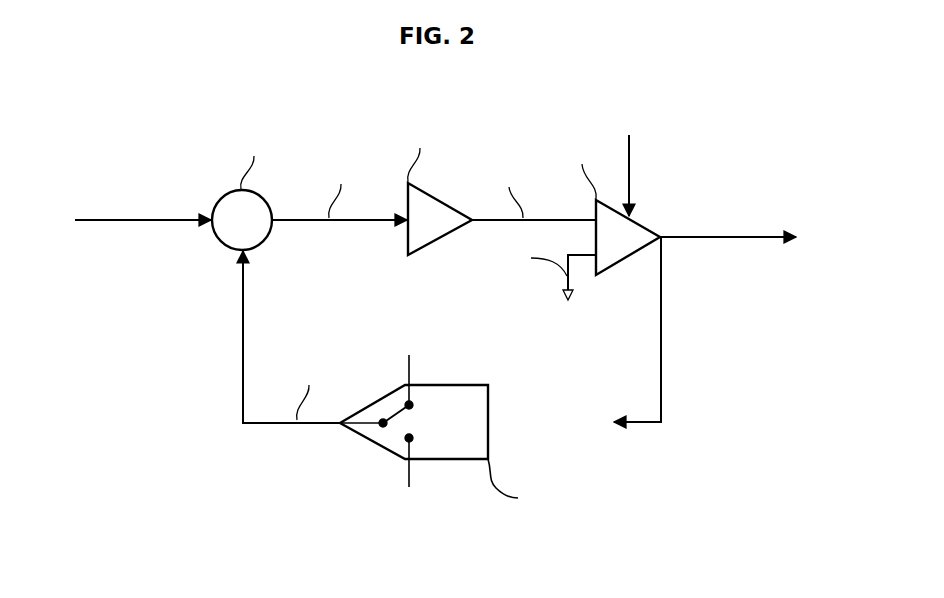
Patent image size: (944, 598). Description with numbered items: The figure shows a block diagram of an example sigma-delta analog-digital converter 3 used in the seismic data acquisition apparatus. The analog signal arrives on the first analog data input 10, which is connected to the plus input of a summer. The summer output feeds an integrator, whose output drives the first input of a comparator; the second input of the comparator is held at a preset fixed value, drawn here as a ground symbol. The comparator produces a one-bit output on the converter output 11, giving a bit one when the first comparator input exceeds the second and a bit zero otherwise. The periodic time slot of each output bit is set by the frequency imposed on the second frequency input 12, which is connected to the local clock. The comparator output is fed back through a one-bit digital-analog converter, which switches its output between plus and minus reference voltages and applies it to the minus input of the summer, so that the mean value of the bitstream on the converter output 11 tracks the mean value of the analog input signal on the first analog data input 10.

The analog-digital converter 3 is at (361, 95).
The first analog data input 10 is at (136, 222).
The converter output 11 is at (733, 236).
The second frequency input 12 is at (632, 173).